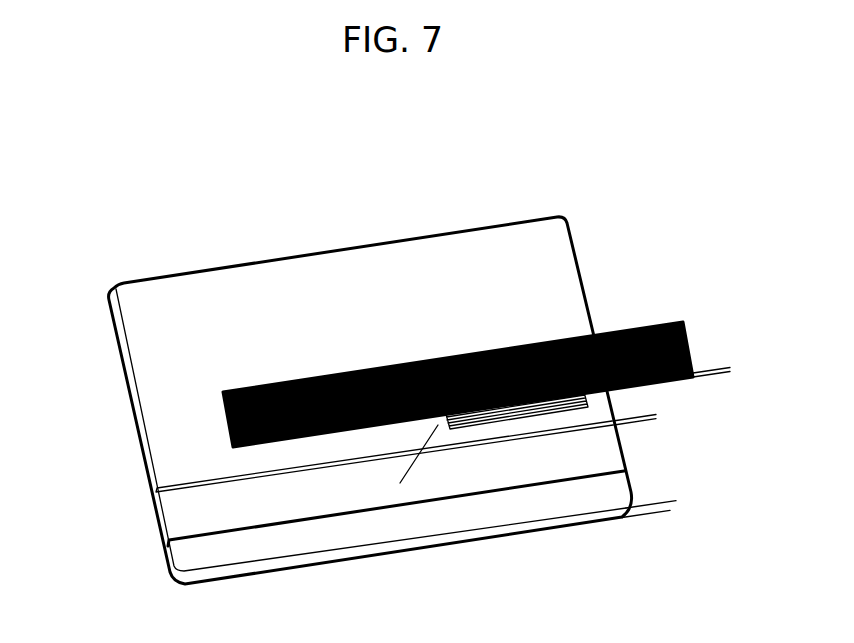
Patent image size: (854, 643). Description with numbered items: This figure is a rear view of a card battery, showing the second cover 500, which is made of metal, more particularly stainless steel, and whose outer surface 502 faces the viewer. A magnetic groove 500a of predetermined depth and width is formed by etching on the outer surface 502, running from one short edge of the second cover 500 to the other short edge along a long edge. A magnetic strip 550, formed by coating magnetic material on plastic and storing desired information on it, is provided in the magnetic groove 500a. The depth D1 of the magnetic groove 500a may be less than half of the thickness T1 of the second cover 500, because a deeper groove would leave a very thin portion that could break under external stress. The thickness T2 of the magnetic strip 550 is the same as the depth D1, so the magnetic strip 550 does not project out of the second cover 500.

The second cover 500 is at (220, 226).
The outer surface 502 is at (148, 351).
The magnetic groove 500a is at (180, 514).
The magnetic strip 550 is at (687, 333).
The thickness of the magnetic strip T2 is at (743, 345).
The depth of the magnetic groove D1 is at (667, 393).
The thickness of the second cover T1 is at (672, 478).